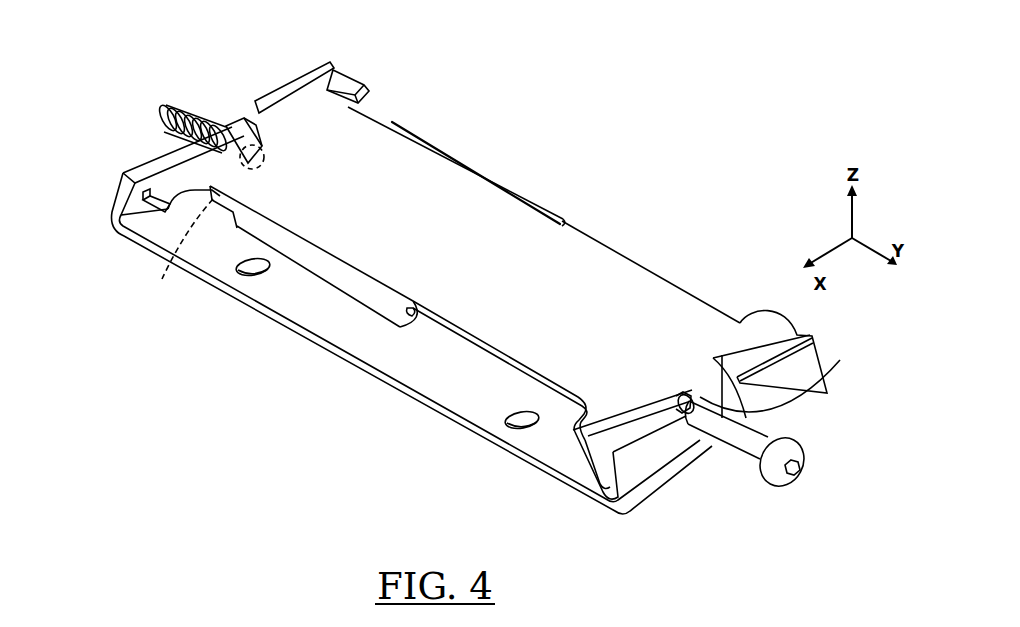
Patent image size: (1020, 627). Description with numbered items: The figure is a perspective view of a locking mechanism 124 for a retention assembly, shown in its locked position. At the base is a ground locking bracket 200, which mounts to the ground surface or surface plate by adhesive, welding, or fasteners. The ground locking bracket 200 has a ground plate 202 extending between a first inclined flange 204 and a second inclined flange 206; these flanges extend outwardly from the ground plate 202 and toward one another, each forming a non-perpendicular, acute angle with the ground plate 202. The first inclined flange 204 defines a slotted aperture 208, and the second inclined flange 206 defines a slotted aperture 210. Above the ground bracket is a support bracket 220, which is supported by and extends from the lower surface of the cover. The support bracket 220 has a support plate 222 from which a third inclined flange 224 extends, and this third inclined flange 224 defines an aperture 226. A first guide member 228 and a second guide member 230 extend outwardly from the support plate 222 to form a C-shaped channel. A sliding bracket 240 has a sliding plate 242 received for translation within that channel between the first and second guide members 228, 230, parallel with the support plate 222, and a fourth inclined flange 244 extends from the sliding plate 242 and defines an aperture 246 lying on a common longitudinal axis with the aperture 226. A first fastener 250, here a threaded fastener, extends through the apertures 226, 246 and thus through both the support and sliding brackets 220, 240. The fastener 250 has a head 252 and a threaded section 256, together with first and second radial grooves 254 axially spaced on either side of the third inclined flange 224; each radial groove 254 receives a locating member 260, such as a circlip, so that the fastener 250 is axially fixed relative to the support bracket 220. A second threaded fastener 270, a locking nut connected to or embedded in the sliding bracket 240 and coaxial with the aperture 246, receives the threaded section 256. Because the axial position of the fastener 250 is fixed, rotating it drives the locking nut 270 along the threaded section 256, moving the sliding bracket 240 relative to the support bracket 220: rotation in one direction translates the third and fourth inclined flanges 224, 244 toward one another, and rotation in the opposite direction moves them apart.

The locking mechanism 124 is at (125, 46).
The ground locking bracket 200 is at (369, 376).
The ground plate 202 is at (285, 304).
The first inclined flange 204 is at (642, 468).
The second inclined flange 206 is at (118, 193).
The slotted aperture 208 is at (748, 401).
The slotted aperture 210 is at (253, 103).
The support bracket 220 is at (453, 222).
The support plate 222 is at (612, 281).
The third inclined flange 224 is at (588, 450).
The aperture 226 is at (691, 392).
The first guide member 228 is at (552, 212).
The second guide member 230 is at (268, 236).
The sliding bracket 240 is at (352, 85).
The sliding plate 242 is at (348, 106).
The fourth inclined flange 244 is at (146, 212).
The aperture 246 is at (187, 143).
The first fastener 250 is at (750, 446).
The head 252 is at (804, 468).
The radial grooves 254 is at (693, 396).
The threaded section 256 is at (165, 118).
The locating member 260 is at (812, 348).
The second threaded fastener 270 is at (240, 124).